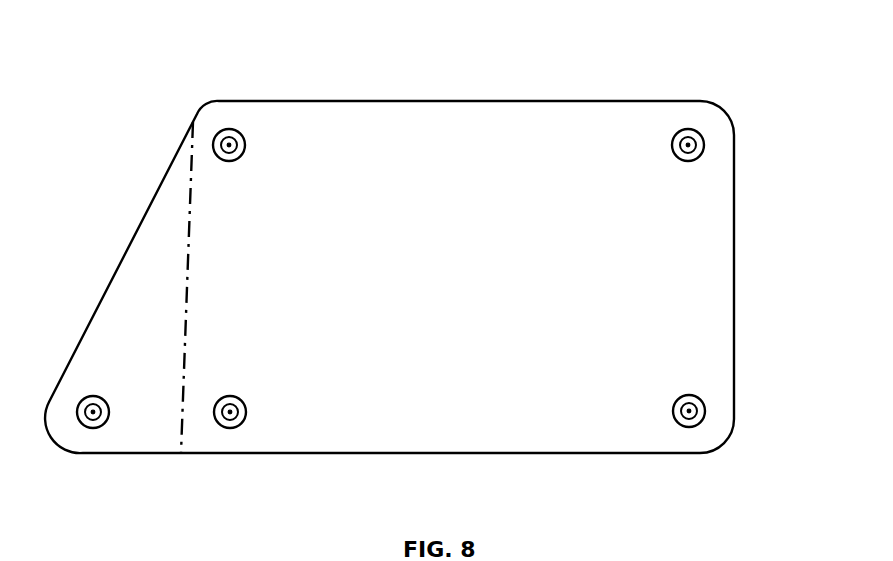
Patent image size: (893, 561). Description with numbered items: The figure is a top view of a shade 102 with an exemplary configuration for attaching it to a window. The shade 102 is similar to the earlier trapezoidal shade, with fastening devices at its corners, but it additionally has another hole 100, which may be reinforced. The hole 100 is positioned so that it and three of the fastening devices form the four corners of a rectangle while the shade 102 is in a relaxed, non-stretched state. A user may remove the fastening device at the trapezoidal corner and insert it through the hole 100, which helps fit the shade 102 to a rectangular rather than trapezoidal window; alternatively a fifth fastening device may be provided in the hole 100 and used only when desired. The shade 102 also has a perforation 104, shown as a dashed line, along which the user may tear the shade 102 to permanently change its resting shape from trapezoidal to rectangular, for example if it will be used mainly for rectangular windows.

The shade 102 is at (499, 101).
The perforation 104 is at (190, 198).
The hole 100 is at (247, 419).